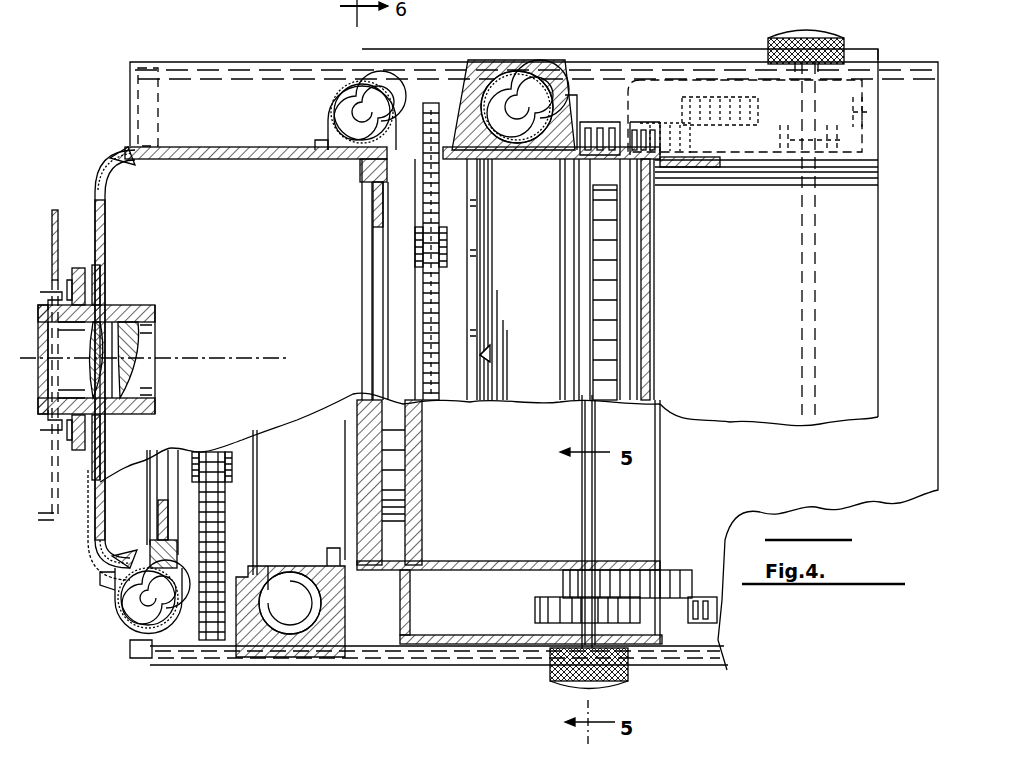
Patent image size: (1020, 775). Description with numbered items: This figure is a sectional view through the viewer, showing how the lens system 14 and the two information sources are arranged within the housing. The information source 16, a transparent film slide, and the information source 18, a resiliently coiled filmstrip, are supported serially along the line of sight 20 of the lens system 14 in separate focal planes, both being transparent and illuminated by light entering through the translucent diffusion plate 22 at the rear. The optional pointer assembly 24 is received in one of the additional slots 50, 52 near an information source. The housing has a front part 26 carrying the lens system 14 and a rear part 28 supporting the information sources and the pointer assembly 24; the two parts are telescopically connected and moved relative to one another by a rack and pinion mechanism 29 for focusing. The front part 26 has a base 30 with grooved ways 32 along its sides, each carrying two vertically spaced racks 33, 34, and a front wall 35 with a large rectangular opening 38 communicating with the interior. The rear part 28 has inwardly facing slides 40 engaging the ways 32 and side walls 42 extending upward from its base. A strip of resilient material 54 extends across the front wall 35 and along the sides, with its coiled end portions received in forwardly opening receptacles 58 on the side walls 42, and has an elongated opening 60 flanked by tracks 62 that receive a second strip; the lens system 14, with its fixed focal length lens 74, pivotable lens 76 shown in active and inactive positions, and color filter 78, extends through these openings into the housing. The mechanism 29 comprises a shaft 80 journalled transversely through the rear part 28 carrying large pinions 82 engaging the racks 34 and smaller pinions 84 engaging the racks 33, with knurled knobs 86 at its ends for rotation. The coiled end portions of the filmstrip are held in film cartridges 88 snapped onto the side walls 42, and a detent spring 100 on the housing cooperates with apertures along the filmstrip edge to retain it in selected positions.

The lens system 14 is at (155, 309).
The information source 16 is at (370, 293).
The information source 18 is at (488, 272).
The line of sight 20 is at (216, 358).
The translucent diffusion plate 22 is at (652, 260).
The pointer assembly 24 is at (430, 103).
The front part 26 is at (130, 94).
The rear part 28 is at (878, 50).
The rack and pinion mechanism 29 is at (840, 36).
The base 30 is at (250, 61).
The grooved way 32 is at (142, 658).
The rack 33 is at (600, 128).
The rack 34 is at (717, 92).
The front wall 35 is at (112, 164).
The rectangular opening 38 is at (105, 197).
The slide 40 is at (600, 49).
The side wall 42 is at (496, 160).
The slot 50 is at (425, 279).
The slot 52 is at (660, 186).
The strip of resilient material 54 is at (76, 430).
The receptacle 58 is at (326, 95).
The opening 60 is at (102, 422).
The track 62 is at (84, 266).
The lens 74 is at (95, 375).
The lens 76 is at (143, 340).
The color filter 78 is at (55, 210).
The shaft 80 is at (815, 322).
The large pinion 82 is at (864, 110).
The smaller pinion 84 is at (846, 140).
The knurled knob 86 is at (785, 30).
The film cartridge 88 is at (528, 60).
The detent spring 100 is at (491, 352).